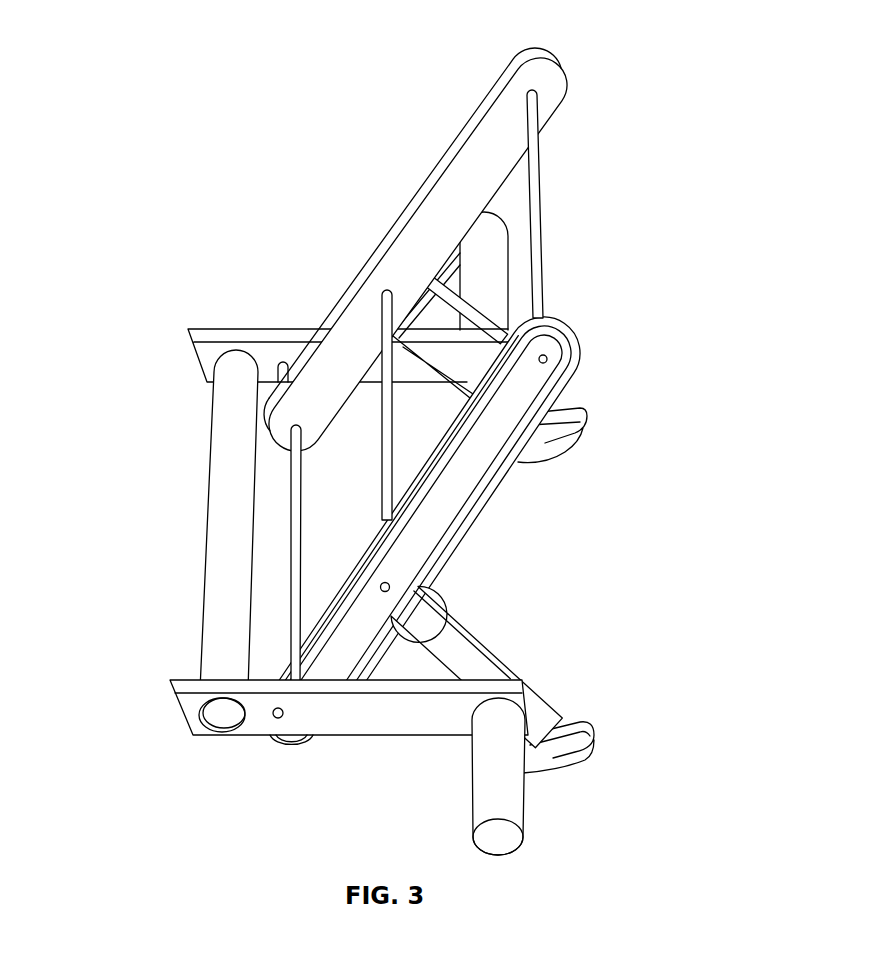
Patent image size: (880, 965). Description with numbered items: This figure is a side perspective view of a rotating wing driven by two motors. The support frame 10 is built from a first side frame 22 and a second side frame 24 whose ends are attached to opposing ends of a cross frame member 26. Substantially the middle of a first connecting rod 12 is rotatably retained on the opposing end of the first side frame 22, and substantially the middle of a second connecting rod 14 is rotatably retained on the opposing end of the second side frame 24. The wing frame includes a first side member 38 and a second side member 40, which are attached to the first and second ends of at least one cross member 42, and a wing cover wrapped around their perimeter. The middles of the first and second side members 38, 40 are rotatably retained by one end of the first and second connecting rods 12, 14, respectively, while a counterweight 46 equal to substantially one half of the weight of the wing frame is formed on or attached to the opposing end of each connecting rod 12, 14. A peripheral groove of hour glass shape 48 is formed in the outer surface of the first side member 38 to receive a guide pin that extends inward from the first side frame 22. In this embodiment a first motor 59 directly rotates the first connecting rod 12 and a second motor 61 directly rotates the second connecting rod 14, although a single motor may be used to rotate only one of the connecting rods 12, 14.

The support frame 10 is at (142, 705).
The first connecting rod 12 is at (475, 633).
The second connecting rod 14 is at (460, 345).
The first side frame 22 is at (375, 722).
The second side frame 24 is at (253, 327).
The cross frame member 26 is at (223, 505).
The first side member 38 is at (562, 313).
The second side member 40 is at (537, 47).
The cross member 42 is at (537, 182).
The counterweight 46 is at (577, 443).
The hour glass groove 48 is at (458, 510).
The first motor 59 is at (503, 843).
The second motor 61 is at (490, 268).